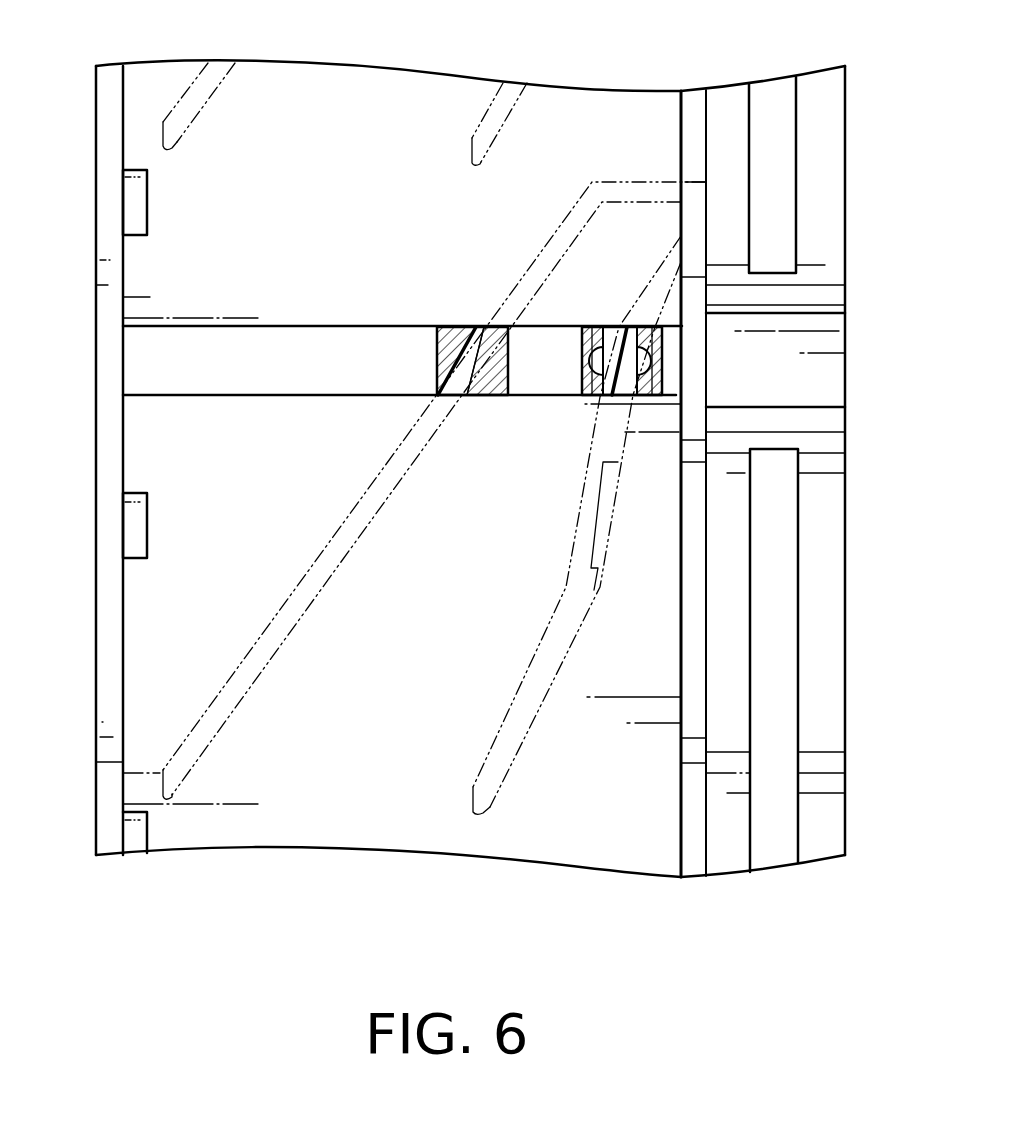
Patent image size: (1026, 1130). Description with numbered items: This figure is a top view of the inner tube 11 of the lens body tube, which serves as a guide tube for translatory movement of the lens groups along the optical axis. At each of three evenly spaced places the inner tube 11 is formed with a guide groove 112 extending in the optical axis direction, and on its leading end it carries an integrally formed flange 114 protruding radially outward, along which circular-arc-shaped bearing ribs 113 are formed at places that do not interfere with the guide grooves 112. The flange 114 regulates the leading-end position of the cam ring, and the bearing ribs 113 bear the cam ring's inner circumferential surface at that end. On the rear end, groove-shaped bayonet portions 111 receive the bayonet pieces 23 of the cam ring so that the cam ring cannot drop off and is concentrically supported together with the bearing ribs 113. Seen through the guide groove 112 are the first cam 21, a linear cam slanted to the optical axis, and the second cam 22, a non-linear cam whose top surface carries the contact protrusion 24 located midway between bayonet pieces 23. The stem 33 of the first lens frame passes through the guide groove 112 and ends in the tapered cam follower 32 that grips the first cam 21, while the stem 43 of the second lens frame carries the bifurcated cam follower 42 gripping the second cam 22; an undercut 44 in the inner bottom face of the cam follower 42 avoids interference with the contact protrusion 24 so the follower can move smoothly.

The inner tube 11 is at (727, 82).
The bayonet portion 111 is at (822, 365).
The guide groove 112 is at (181, 326).
The bearing rib 113 is at (140, 210).
The flange 114 is at (110, 478).
The first cam 21 is at (183, 742).
The second cam 22 is at (500, 788).
The bayonet piece 23 is at (697, 238).
The contact protrusion 24 is at (607, 540).
The cam follower 32 is at (450, 327).
The stem 33 is at (486, 397).
The cam follower 42 is at (583, 368).
The stem 43 is at (657, 397).
The undercut 44 is at (630, 325).